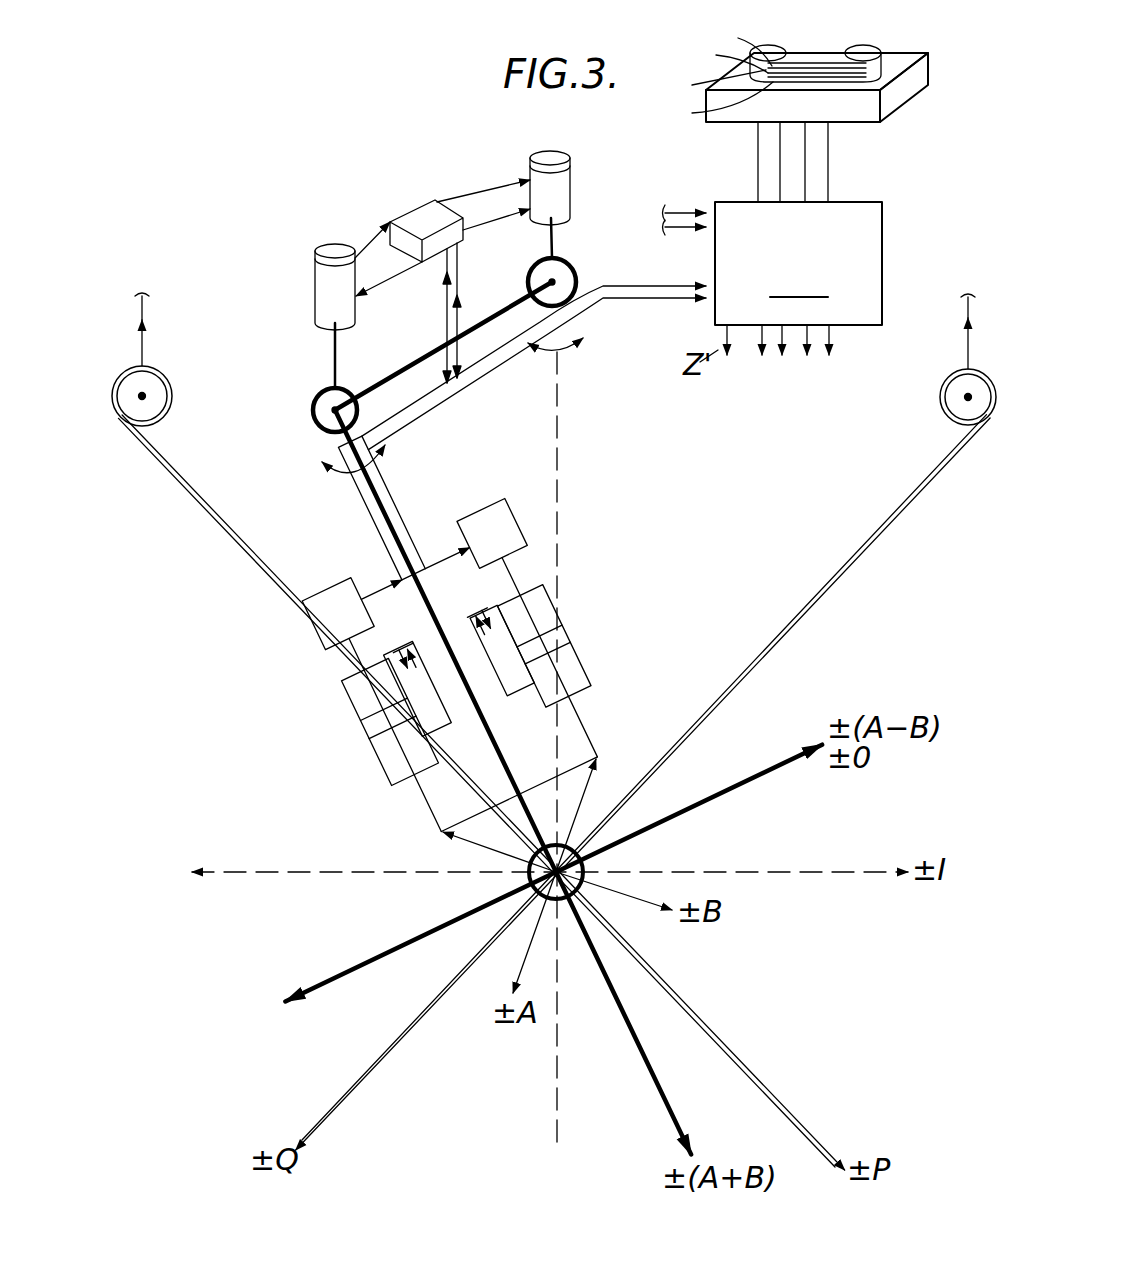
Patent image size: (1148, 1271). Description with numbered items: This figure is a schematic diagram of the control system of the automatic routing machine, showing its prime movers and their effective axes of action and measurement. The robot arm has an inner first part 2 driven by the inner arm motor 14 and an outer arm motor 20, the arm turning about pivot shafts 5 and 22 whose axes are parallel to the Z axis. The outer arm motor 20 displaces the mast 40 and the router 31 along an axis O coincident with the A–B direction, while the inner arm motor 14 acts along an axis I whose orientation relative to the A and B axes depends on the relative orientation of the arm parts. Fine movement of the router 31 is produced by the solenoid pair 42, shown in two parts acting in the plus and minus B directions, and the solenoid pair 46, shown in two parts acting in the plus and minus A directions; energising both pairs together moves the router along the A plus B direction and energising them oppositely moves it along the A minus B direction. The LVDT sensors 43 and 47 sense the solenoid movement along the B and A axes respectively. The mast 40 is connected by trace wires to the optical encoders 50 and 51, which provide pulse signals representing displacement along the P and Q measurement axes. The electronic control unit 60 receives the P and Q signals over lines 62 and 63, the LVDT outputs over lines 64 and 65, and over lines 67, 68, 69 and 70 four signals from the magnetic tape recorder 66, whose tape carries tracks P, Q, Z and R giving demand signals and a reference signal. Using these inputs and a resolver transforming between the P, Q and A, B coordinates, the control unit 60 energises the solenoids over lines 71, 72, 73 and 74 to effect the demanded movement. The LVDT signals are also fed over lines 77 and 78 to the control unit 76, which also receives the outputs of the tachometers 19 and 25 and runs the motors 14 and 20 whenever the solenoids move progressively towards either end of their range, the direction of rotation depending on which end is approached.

The inner first part 2 is at (414, 364).
The pivot shaft 5 is at (568, 270).
The inner arm motor 14 is at (543, 201).
The tachometer 19 is at (530, 160).
The outer arm motor 20 is at (306, 316).
The pivot shaft 22 is at (312, 410).
The tachometer 25 is at (318, 278).
The router 31 is at (527, 878).
The mast 40 is at (474, 881).
The solenoid pair 42 is at (343, 702).
The LVDT sensor 43 is at (352, 595).
The solenoid pair 46 is at (548, 594).
The LVDT sensor 47 is at (480, 523).
The optical encoder 50 is at (165, 388).
The optical encoder 51 is at (942, 388).
The electronic control unit 60 is at (798, 263).
The line 62 is at (142, 347).
The line 63 is at (968, 313).
The line 64 is at (657, 283).
The line 65 is at (672, 300).
The magnetic tape recorder 66 is at (900, 112).
The line 67 is at (758, 180).
The line 68 is at (780, 150).
The line 69 is at (805, 150).
The line 70 is at (828, 180).
The line 71 is at (760, 360).
The line 72 is at (782, 360).
The line 73 is at (808, 360).
The line 74 is at (830, 360).
The control unit 76 is at (406, 220).
The line 77 is at (446, 305).
The line 78 is at (458, 263).